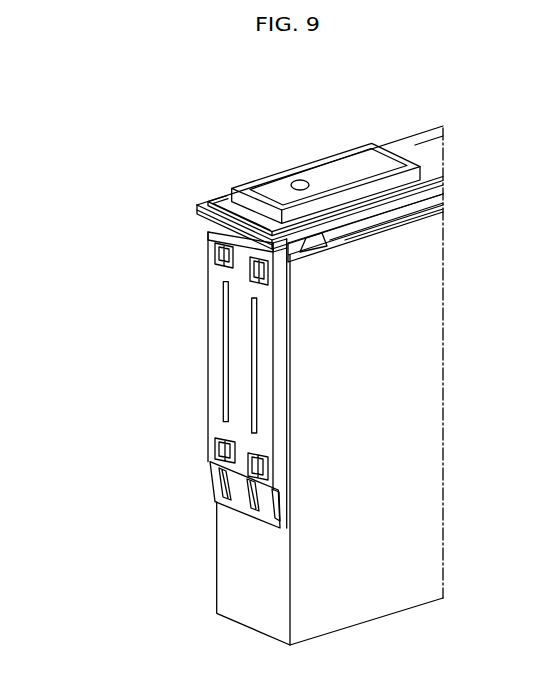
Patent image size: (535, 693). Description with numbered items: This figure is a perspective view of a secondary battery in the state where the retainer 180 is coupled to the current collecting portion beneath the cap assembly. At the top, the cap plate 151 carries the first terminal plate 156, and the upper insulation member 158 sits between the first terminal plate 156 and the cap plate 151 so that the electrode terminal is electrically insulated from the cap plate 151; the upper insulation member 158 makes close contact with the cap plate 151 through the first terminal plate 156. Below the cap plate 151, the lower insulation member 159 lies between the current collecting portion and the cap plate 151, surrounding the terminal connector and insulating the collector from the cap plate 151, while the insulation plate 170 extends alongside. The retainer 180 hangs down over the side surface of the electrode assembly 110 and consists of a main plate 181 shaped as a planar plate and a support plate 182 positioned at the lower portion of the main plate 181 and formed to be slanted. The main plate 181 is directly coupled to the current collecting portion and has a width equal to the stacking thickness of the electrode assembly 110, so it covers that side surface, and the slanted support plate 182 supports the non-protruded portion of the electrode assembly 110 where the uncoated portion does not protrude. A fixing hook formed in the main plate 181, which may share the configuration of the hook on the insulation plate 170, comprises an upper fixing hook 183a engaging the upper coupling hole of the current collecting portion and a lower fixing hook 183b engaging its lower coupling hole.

The electrode assembly 110 is at (441, 493).
The cap plate 151 is at (205, 198).
The first terminal plate 156 is at (332, 170).
The upper insulation member 158 is at (223, 190).
The lower insulation member 159 is at (208, 226).
The insulation plate 170 is at (357, 230).
The retainer 180 is at (102, 485).
The main plate 181 is at (210, 390).
The support plate 182 is at (212, 477).
The upper fixing hook 183a is at (252, 271).
The lower fixing hook 183b is at (253, 516).